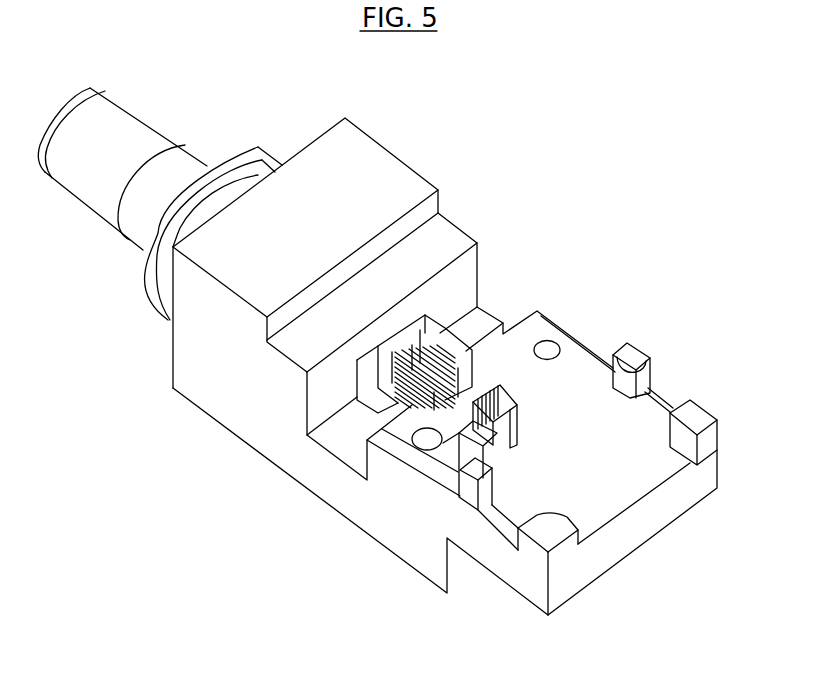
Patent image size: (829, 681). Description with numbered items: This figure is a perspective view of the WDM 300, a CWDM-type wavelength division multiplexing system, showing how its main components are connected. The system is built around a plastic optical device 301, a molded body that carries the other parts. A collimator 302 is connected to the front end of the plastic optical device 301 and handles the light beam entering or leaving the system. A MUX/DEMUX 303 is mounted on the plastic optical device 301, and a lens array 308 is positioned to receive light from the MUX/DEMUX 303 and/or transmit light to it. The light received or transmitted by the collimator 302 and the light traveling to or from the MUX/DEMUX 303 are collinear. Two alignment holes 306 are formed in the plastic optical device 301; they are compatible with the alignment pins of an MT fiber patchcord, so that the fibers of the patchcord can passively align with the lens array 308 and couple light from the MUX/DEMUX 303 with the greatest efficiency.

The WDM 300 is at (643, 92).
The plastic optical device 301 is at (380, 172).
The collimator 302 is at (135, 125).
The MUX/DEMUX 303 is at (447, 353).
The alignment holes 306 is at (550, 350).
The lens array 308 is at (500, 380).